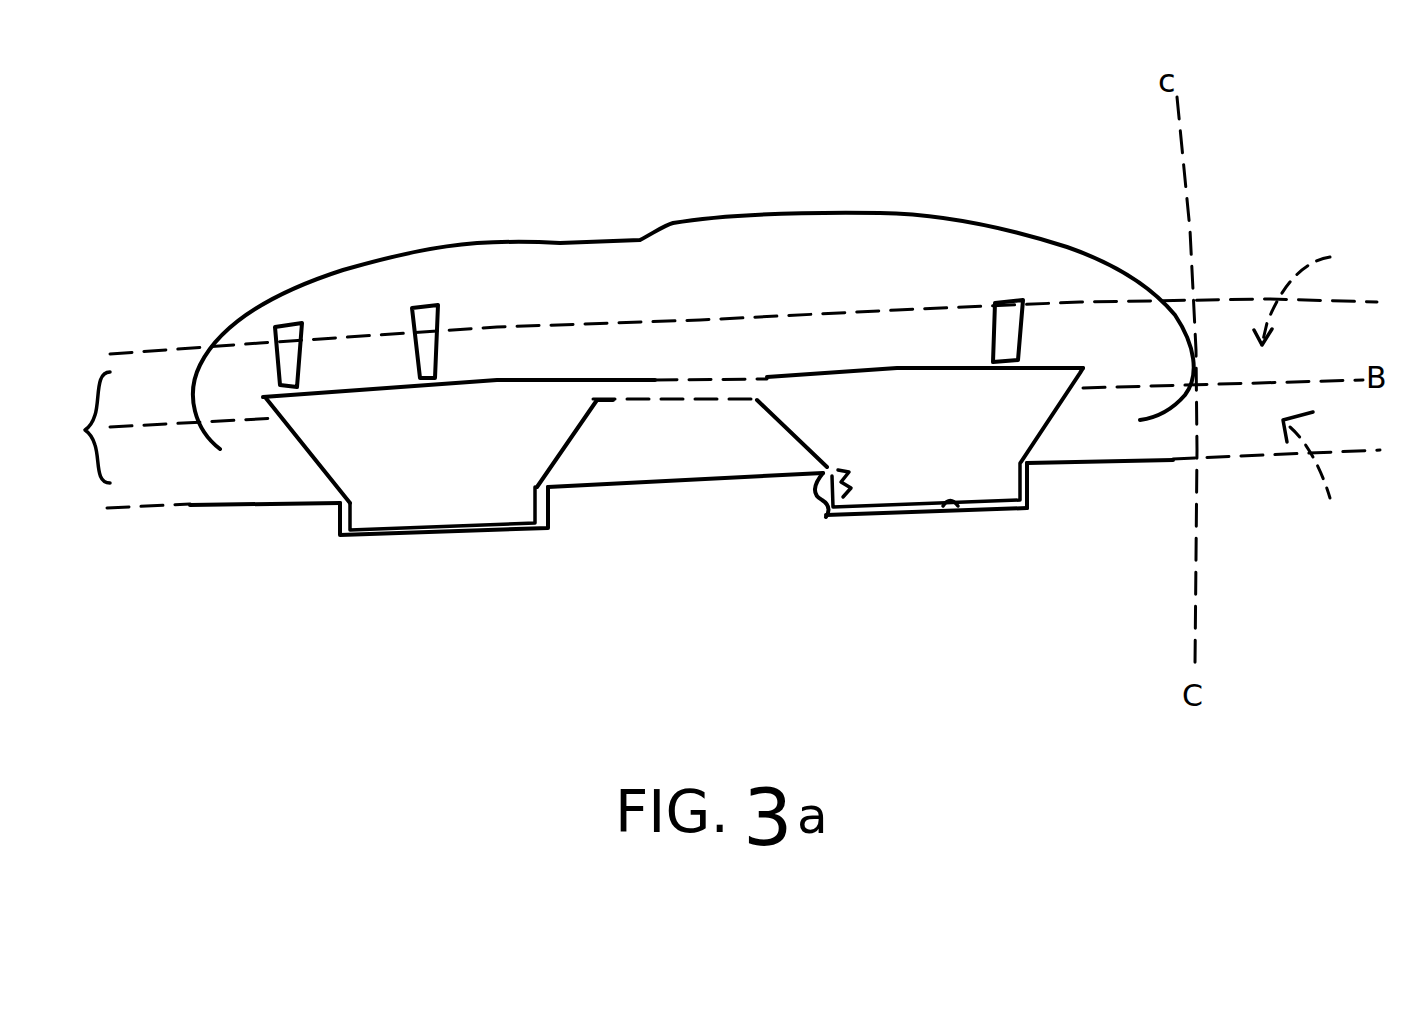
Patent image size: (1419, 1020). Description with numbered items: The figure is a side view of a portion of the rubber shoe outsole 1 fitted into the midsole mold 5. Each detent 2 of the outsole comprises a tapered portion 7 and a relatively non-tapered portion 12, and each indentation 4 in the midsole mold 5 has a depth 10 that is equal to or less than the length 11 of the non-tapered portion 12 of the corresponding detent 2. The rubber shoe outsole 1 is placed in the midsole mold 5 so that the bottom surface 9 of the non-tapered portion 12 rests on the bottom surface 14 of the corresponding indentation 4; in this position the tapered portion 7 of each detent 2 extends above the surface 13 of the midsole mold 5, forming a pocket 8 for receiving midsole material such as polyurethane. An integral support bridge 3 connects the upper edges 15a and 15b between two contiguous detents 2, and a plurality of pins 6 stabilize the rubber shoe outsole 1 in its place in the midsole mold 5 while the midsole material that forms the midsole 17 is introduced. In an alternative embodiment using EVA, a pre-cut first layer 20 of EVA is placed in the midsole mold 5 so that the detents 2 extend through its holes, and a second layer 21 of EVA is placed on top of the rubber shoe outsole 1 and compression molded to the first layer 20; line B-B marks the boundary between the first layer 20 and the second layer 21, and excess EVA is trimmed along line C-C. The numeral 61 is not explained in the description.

The rubber shoe outsole 1 is at (898, 410).
The detent 2 is at (443, 447).
The integral support bridge 3 is at (640, 393).
The indentation 4 is at (923, 517).
The midsole mold 5 is at (293, 557).
The pin 6 is at (410, 306).
The tapered portion 7 is at (800, 415).
The pocket 8 is at (680, 423).
The bottom surface of the non-tapered portion 9 is at (860, 515).
The depth 10 is at (810, 502).
The length 11 is at (847, 483).
The non-tapered portion 12 is at (1033, 509).
The surface of the midsole mold 13 is at (605, 478).
The bottom surface of the indentation 14 is at (962, 507).
The upper edge 15a is at (769, 395).
The upper edge 15b is at (590, 393).
The midsole 17 is at (85, 430).
The first layer of EVA 20 is at (1318, 478).
The second layer of EVA 21 is at (1315, 291).
The slot 61 is at (1013, 317).